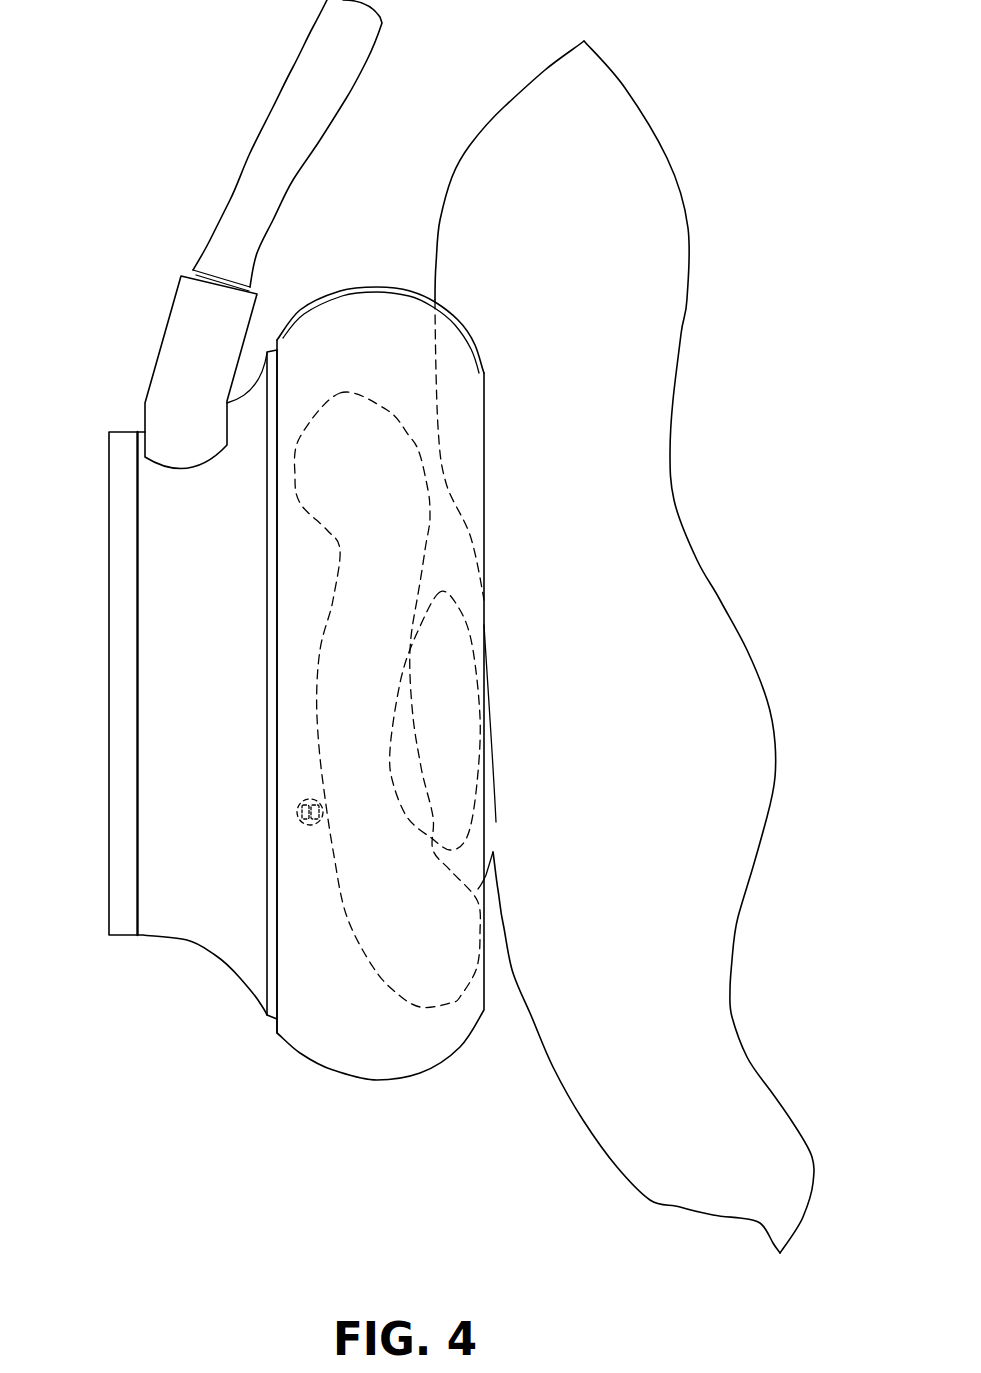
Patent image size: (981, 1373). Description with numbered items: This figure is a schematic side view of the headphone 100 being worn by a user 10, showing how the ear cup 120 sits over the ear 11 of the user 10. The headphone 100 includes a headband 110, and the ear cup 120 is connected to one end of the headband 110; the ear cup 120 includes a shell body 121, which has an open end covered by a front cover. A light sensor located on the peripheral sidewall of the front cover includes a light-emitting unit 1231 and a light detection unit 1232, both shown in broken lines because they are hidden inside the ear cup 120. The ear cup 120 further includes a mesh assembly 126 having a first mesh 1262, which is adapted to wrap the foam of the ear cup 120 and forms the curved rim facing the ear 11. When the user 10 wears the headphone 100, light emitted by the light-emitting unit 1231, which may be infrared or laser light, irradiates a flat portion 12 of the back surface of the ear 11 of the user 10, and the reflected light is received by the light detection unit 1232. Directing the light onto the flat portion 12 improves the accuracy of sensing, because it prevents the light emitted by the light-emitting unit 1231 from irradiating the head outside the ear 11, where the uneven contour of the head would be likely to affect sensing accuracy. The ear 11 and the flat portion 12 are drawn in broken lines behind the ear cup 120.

The user 10 is at (523, 108).
The ear 11 is at (387, 410).
The flat portion 12 is at (433, 850).
The headphone 100 is at (91, 135).
The headband 110 is at (283, 93).
The ear cup 120 is at (106, 323).
The shell body 121 is at (158, 920).
The light-emitting unit 1231 is at (300, 813).
The light detection unit 1232 is at (310, 822).
The first mesh 1262 is at (327, 330).
The mesh assembly 126 is at (380, 643).